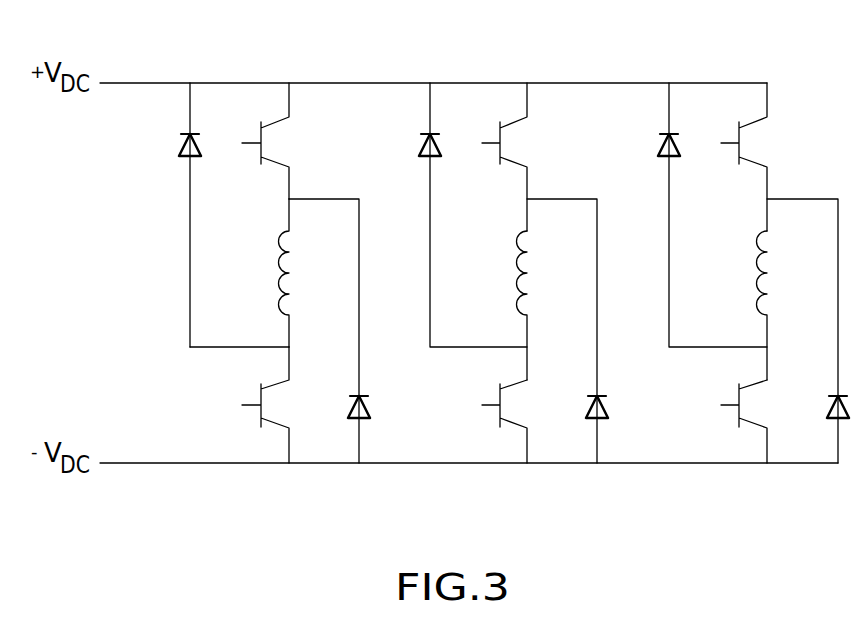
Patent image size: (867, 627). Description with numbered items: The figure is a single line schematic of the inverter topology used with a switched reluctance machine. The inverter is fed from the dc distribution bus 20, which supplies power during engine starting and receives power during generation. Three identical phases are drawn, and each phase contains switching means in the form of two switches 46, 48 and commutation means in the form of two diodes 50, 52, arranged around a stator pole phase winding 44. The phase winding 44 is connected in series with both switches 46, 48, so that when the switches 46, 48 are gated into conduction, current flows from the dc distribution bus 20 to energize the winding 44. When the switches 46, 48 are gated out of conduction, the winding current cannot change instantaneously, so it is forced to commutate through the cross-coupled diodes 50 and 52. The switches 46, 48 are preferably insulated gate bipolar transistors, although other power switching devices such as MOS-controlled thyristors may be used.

The dc distribution bus 20 is at (144, 83).
The stator pole phase winding 44 is at (283, 268).
The switch 46 is at (263, 136).
The switch 48 is at (260, 397).
The diode 50 is at (184, 140).
The diode 52 is at (368, 406).